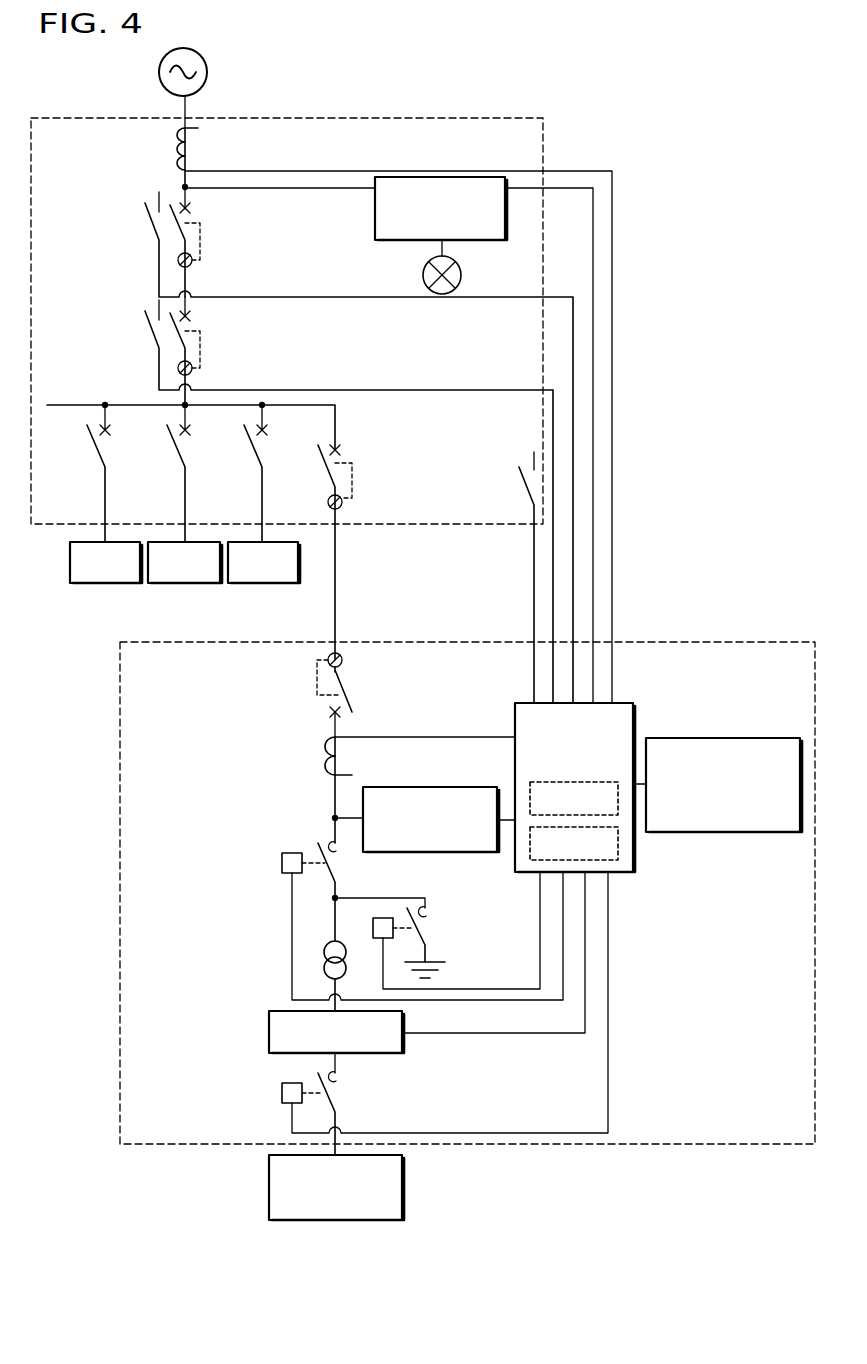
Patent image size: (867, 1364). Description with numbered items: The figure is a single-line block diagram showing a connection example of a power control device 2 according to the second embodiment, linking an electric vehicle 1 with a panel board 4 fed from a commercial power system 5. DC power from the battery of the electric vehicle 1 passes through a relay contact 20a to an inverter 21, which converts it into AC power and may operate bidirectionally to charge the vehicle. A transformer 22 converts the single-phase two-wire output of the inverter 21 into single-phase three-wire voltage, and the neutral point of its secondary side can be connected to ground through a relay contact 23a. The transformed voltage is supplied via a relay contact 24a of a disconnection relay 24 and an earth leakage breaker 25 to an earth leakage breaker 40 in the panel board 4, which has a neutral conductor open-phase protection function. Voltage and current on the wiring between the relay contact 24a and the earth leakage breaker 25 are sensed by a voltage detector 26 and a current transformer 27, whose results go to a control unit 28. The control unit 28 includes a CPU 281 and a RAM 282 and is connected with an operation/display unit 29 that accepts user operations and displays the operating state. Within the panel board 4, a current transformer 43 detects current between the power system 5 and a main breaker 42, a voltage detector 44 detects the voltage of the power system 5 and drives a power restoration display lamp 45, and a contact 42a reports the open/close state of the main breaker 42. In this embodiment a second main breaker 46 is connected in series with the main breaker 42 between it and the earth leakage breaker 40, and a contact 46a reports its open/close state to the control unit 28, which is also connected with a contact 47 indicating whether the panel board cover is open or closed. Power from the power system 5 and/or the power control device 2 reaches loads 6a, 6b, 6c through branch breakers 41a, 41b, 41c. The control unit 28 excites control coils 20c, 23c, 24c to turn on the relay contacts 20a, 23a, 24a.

The electric vehicle 1 is at (403, 1198).
The power control device 2 is at (700, 642).
The panel board 4 is at (472, 118).
The power system 5 is at (208, 74).
The load 6a is at (265, 584).
The load 6b is at (187, 584).
The load 6c is at (107, 584).
The relay contact 20a is at (346, 1094).
The control coil 20c is at (282, 1092).
The inverter 21 is at (403, 1044).
The transformer 22 is at (324, 952).
The relay contact 23a is at (436, 930).
The control coil 23c is at (373, 926).
The disconnection relay 24 is at (354, 909).
The relay contact 24a is at (312, 848).
The control coil 24c is at (282, 862).
The earth leakage breaker 25 is at (347, 683).
The voltage detector 26 is at (430, 853).
The current transformer 27 is at (320, 755).
The control unit 28 is at (540, 787).
The CPU 281 is at (535, 783).
The RAM 282 is at (534, 860).
The operation/display unit 29 is at (722, 738).
The earth leakage breaker 40 is at (345, 452).
The branch breaker 41a is at (264, 445).
The branch breaker 41b is at (187, 445).
The branch breaker 41c is at (107, 445).
The main breaker 42 is at (195, 219).
The contact 42a is at (145, 233).
The current transformer 43 is at (205, 148).
The voltage detector 44 is at (373, 203).
The power restoration display lamp 45 is at (423, 276).
The second main breaker 46 is at (195, 327).
The contact 46a is at (145, 342).
The contact 47 is at (519, 497).